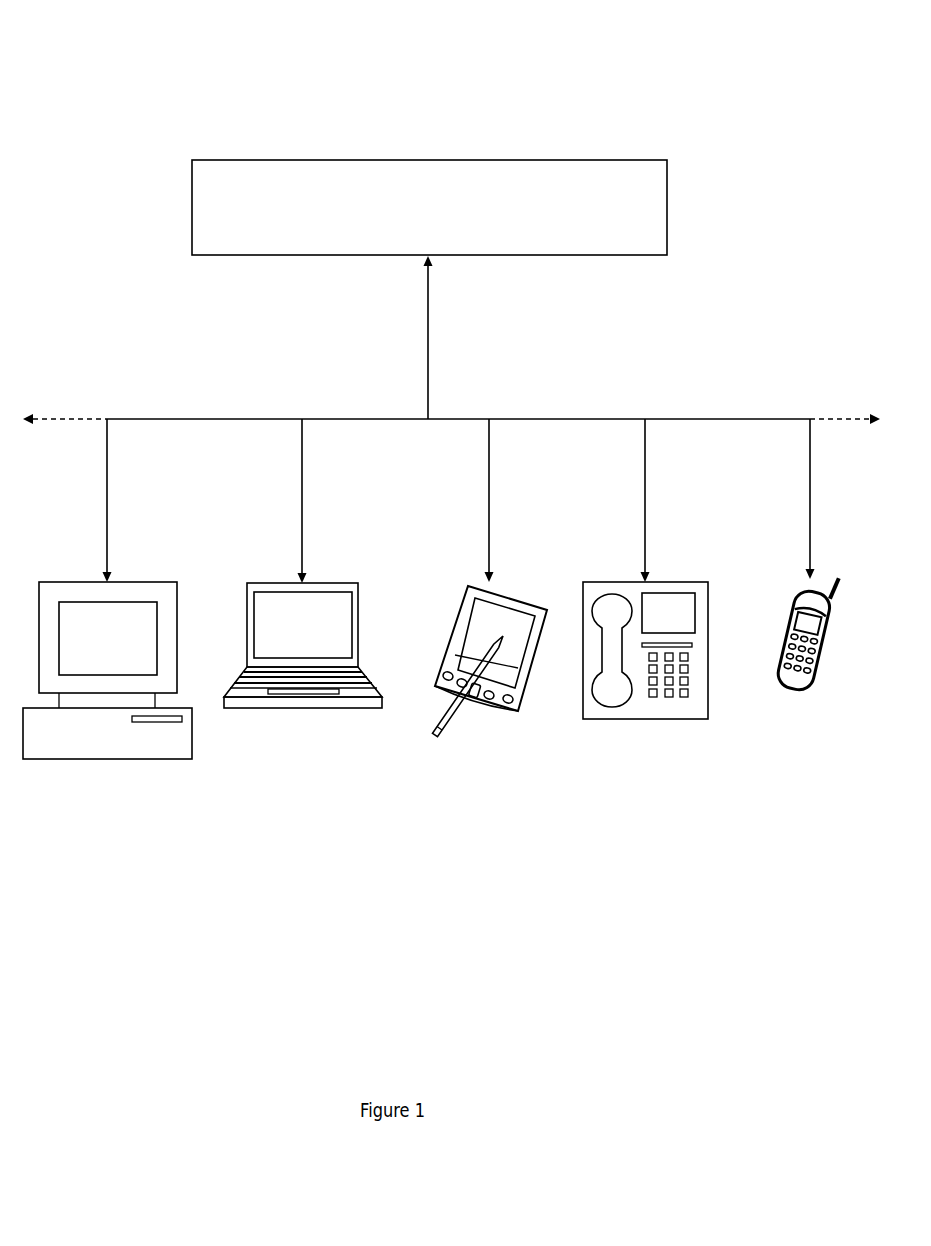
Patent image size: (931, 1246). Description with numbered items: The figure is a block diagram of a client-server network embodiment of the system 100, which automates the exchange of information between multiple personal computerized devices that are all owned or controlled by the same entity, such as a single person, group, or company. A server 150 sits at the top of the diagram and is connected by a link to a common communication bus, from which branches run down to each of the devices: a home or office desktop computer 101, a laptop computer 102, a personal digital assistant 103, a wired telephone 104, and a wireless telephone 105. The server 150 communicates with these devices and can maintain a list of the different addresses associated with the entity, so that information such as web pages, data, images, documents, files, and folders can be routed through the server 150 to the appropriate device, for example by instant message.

The system 100 is at (116, 61).
The server 150 is at (428, 160).
The desktop computer 101 is at (107, 760).
The laptop computer 102 is at (302, 710).
The personal digital assistant 103 is at (482, 701).
The wired telephone 104 is at (645, 720).
The wireless telephone 105 is at (800, 688).